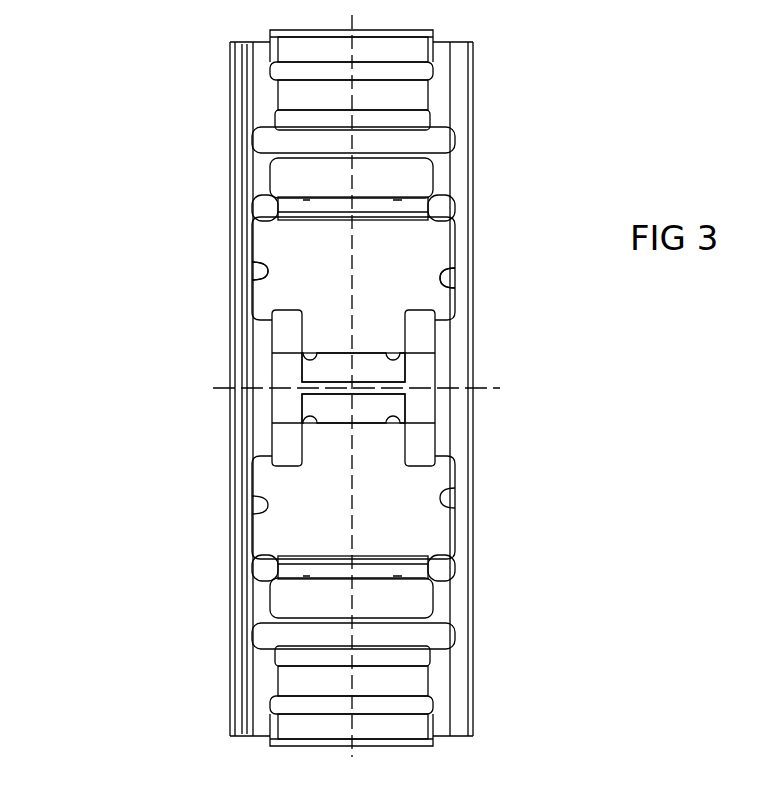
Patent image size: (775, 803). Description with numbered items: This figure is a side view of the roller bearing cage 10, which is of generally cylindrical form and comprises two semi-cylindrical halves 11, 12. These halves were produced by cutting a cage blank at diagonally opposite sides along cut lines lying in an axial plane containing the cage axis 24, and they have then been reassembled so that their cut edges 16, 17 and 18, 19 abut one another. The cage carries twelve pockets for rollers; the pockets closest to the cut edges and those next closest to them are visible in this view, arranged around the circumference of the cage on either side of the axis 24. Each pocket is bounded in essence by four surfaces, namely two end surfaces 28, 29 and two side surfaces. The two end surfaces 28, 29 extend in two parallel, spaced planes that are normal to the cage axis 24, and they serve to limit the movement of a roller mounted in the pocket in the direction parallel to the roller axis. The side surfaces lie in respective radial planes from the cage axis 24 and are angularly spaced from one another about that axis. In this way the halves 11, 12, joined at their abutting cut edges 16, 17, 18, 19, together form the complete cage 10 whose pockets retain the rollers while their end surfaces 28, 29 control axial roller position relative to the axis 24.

The roller bearing cage 10 is at (553, 407).
The semi-cylindrical half 11 is at (173, 232).
The semi-cylindrical half 12 is at (180, 550).
The cut edge 16 is at (453, 388).
The cut edge 17 is at (471, 388).
The cut edge 18 is at (456, 354).
The cut edge 19 is at (502, 366).
The cage axis 24 is at (213, 390).
The end surface 28 is at (270, 263).
The end surface 29 is at (452, 283).